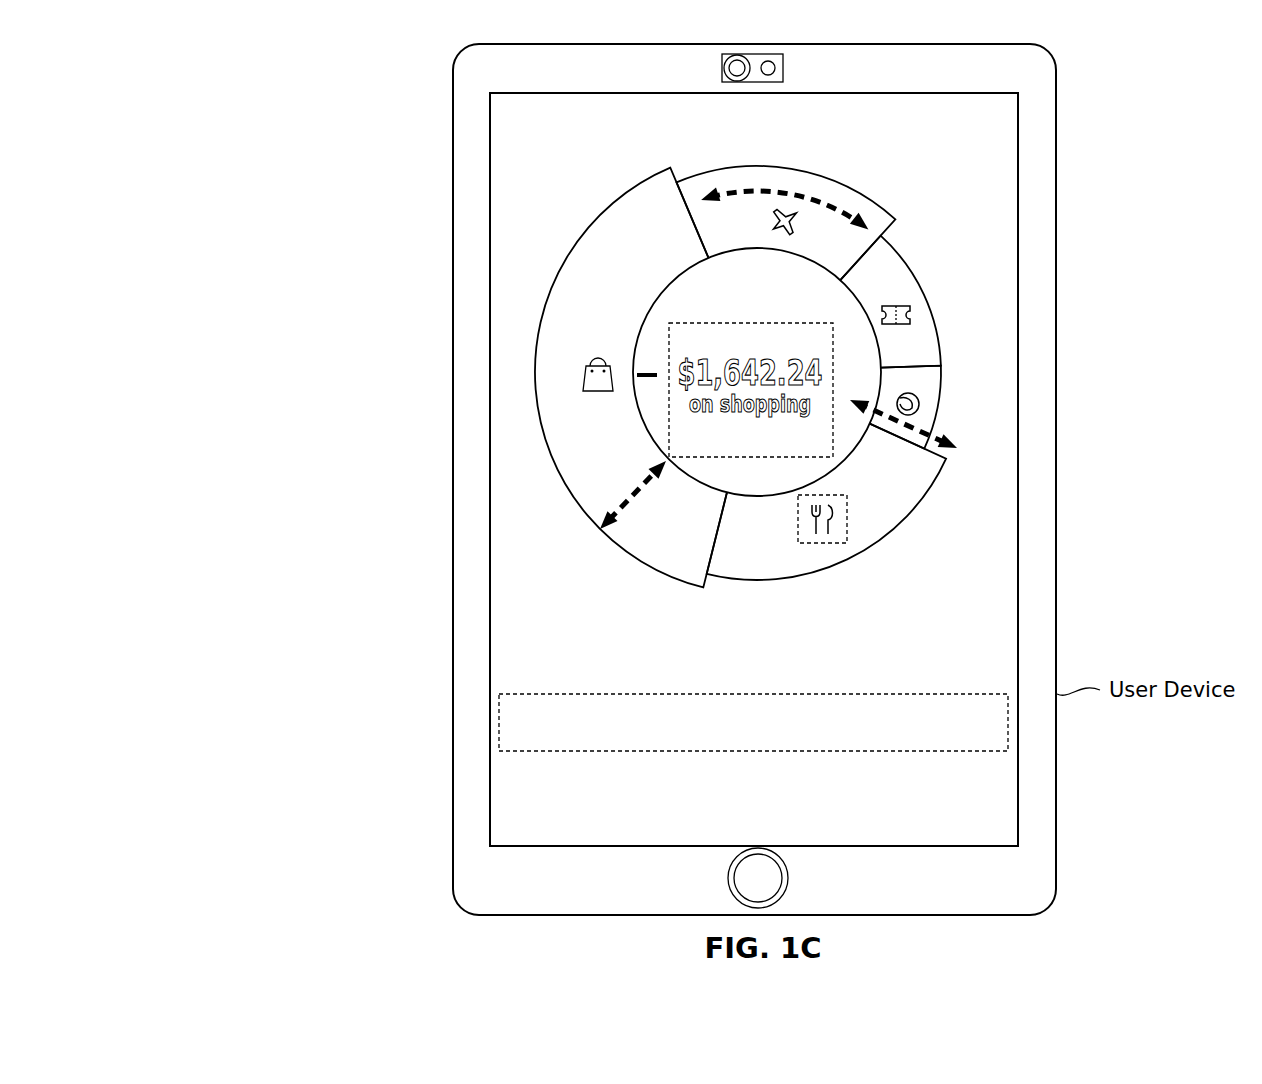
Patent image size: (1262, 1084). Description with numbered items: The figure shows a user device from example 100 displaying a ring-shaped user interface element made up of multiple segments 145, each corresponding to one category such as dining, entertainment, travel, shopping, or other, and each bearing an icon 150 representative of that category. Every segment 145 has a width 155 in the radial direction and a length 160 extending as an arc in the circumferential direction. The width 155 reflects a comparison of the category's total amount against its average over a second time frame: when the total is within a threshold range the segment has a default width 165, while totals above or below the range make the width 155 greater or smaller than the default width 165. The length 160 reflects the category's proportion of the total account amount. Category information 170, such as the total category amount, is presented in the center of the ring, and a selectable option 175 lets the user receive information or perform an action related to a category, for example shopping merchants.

The example 100 is at (278, 66).
The segment 145 is at (539, 380).
The icon 150 is at (822, 546).
The width 155 is at (645, 502).
The length 160 is at (790, 188).
The default width 165 is at (897, 425).
The category information 170 is at (835, 384).
The selectable option 175 is at (583, 753).